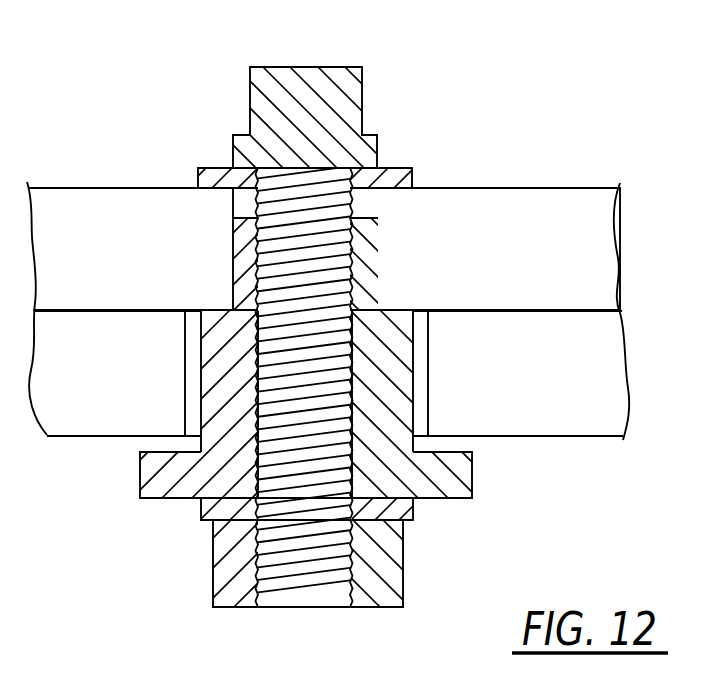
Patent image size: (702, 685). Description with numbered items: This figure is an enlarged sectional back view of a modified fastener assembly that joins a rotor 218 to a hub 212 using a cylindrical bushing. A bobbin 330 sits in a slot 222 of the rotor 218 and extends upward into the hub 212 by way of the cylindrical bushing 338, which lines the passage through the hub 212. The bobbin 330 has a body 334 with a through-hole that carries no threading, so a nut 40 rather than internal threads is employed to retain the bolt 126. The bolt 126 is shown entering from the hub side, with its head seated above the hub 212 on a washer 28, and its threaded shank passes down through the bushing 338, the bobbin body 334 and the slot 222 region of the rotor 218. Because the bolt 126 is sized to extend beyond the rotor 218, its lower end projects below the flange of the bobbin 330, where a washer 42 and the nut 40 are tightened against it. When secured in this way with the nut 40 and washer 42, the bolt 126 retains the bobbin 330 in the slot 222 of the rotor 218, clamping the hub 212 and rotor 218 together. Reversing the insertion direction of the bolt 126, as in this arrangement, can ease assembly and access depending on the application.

The bolt 126 is at (338, 52).
The washer 28 is at (403, 168).
The hub 212 is at (100, 200).
The cylindrical bushing 338 is at (372, 268).
The rotor 218 is at (78, 420).
The slot 222 is at (183, 363).
The body 334 is at (400, 388).
The bobbin 330 is at (450, 488).
The washer 42 is at (205, 515).
The nut 40 is at (218, 570).